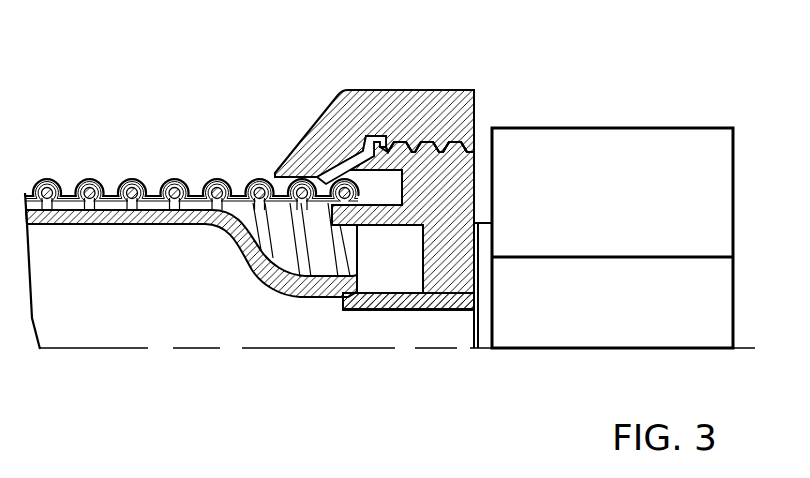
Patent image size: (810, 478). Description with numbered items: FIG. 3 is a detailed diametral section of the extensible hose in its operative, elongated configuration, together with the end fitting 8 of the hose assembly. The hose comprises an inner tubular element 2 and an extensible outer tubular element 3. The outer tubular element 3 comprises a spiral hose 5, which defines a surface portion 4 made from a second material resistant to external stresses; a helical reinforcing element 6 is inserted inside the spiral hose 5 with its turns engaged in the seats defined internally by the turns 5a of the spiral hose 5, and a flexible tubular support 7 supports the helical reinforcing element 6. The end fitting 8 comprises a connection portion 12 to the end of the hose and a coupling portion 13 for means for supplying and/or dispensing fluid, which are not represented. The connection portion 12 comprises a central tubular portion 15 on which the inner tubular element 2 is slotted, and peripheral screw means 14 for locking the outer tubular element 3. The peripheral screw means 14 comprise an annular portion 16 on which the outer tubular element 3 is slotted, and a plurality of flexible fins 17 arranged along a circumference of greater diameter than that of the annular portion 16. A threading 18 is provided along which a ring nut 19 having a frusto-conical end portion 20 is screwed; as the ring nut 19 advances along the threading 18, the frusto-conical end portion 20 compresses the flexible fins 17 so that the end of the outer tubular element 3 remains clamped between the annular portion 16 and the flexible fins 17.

The inner tubular element 2 is at (283, 290).
The extensible outer tubular element 3 is at (175, 176).
The surface portion 4 is at (90, 176).
The spiral hose 5 is at (44, 180).
The turns of the spiral hose 5a is at (131, 181).
The helical reinforcing element 6 is at (194, 214).
The flexible tubular support 7 is at (88, 203).
The end fitting 8 is at (619, 124).
The connection portion 12 is at (291, 131).
The coupling portion 13 is at (578, 152).
The peripheral screw means 14 is at (477, 146).
The central tubular portion 15 is at (403, 300).
The annular portion 16 is at (367, 232).
The flexible fins 17 is at (352, 169).
The threading 18 is at (433, 150).
The ring nut 19 is at (411, 100).
The frusto-conical end portion 20 is at (330, 130).